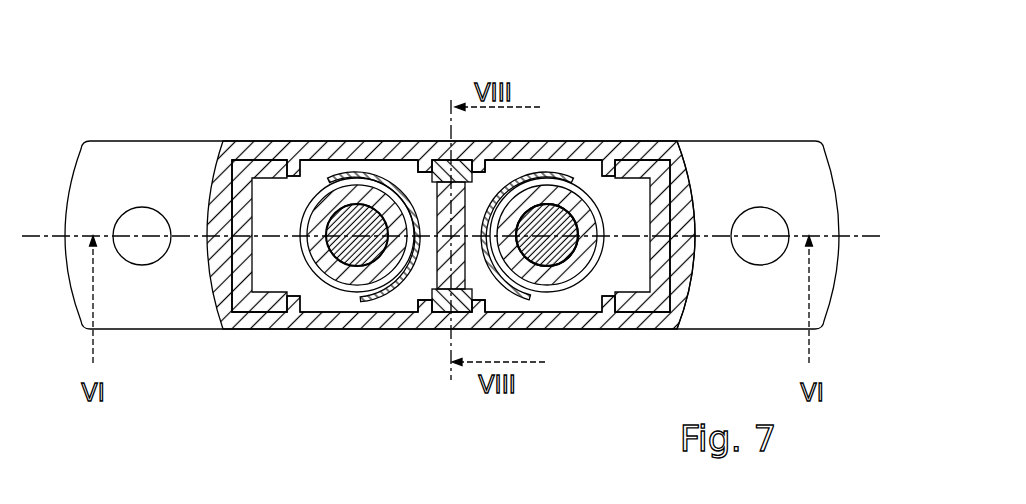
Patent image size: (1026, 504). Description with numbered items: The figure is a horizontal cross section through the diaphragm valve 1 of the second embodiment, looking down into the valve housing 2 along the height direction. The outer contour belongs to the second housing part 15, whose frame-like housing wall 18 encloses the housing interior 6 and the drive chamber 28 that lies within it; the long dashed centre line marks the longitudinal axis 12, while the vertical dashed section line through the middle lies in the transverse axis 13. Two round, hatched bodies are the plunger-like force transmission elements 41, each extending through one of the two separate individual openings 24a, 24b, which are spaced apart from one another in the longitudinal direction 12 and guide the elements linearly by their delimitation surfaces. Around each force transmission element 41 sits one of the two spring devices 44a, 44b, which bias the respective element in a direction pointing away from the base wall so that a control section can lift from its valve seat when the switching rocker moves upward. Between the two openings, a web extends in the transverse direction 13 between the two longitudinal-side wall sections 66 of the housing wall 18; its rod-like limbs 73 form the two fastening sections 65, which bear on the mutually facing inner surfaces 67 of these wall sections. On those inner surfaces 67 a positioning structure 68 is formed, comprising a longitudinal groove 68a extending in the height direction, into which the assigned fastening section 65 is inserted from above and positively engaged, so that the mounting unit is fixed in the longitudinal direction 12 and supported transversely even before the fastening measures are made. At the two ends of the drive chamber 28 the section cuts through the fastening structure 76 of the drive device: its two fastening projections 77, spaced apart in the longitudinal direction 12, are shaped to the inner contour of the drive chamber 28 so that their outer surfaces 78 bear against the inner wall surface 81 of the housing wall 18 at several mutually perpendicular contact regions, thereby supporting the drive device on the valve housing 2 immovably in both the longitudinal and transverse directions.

The diaphragm valve 1 is at (790, 95).
The valve housing 2 is at (430, 238).
The second housing part 15 is at (430, 238).
The housing interior 6 is at (274, 190).
The longitudinal axis 12 is at (853, 234).
The transverse axis 13 is at (450, 338).
The housing wall 18 is at (210, 150).
The individual opening 24a is at (416, 232).
The individual opening 24b is at (568, 222).
The drive chamber 28 is at (693, 180).
The force transmission element 41 is at (330, 245).
The spring device 44a is at (372, 294).
The spring device 44b is at (548, 175).
The fastening section 65 is at (413, 232).
The limb 73 is at (437, 190).
The longitudinal-side wall section 66 is at (392, 175).
The inner surface 67 is at (467, 255).
The positioning structure 68 is at (490, 152).
The longitudinal groove 68a is at (440, 170).
The fastening structure 76 is at (246, 148).
The fastening projection 77 is at (442, 278).
The outer surface 78 is at (442, 278).
The inner wall surface 81 is at (244, 216).